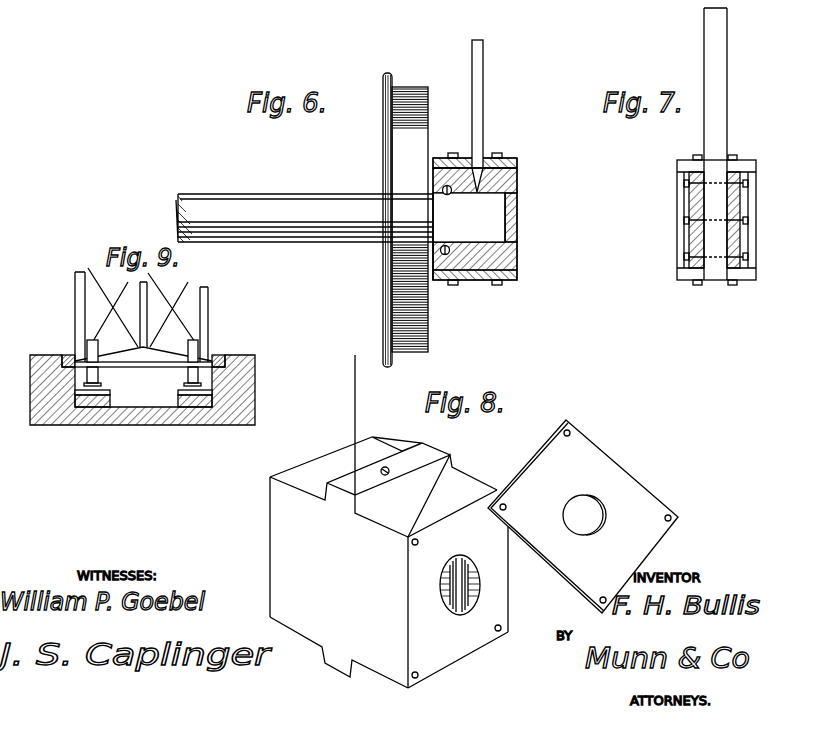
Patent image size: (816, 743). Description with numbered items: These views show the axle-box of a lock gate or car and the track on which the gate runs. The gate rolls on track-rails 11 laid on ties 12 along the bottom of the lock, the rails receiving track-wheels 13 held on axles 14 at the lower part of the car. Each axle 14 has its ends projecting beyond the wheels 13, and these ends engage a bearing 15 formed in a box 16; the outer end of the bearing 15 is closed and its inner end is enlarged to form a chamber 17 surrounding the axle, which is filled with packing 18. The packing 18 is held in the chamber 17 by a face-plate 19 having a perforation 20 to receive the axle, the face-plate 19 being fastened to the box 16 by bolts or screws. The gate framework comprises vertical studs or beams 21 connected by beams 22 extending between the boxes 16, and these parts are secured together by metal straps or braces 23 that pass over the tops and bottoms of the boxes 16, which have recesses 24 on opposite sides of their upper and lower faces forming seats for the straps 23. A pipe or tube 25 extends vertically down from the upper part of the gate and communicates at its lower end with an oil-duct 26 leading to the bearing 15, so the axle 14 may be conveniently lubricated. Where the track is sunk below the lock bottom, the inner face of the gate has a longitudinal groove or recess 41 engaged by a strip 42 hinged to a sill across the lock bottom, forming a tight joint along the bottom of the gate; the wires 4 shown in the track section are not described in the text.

In FIG. 9, the wires 4 is at (143, 317).
In FIG. 9, the track-rails 11 is at (184, 384).
In FIG. 9, the ties 12 is at (178, 396).
In FIG. 6, the track-wheels 13 is at (416, 88).
In FIG. 6, the axle 14 is at (340, 218).
In FIG. 6, the bearing 15 is at (518, 218).
In FIG. 8, the bearing 15 is at (450, 581).
In FIG. 6, the box 16 is at (518, 253).
In FIG. 7, the box 16 is at (757, 202).
In FIG. 8, the box 16 is at (389, 562).
In FIG. 8, the chamber 17 is at (480, 602).
In FIG. 6, the packing 18 is at (445, 247).
In FIG. 6, the face-plate 19 is at (433, 257).
In FIG. 8, the face-plate 19 is at (583, 516).
In FIG. 8, the perforation 20 is at (591, 506).
In FIG. 7, the vertical studs or beams 21 is at (722, 108).
In FIG. 7, the beams 22 is at (690, 238).
In FIG. 6, the metal straps or braces 23 is at (453, 153).
In FIG. 7, the metal straps or braces 23 is at (690, 157).
In FIG. 8, the recesses 24 is at (304, 657).
In FIG. 6, the pipes or tubes 25 is at (484, 106).
In FIG. 6, the oil-duct 26 is at (518, 184).
In FIG. 9, the longitudinal groove or recess 41 is at (142, 346).
In FIG. 9, the strip 42 is at (70, 354).